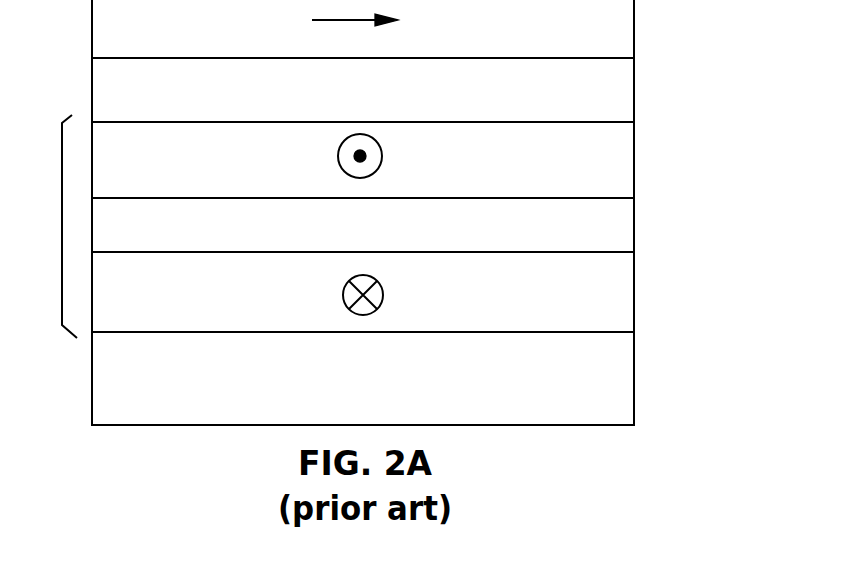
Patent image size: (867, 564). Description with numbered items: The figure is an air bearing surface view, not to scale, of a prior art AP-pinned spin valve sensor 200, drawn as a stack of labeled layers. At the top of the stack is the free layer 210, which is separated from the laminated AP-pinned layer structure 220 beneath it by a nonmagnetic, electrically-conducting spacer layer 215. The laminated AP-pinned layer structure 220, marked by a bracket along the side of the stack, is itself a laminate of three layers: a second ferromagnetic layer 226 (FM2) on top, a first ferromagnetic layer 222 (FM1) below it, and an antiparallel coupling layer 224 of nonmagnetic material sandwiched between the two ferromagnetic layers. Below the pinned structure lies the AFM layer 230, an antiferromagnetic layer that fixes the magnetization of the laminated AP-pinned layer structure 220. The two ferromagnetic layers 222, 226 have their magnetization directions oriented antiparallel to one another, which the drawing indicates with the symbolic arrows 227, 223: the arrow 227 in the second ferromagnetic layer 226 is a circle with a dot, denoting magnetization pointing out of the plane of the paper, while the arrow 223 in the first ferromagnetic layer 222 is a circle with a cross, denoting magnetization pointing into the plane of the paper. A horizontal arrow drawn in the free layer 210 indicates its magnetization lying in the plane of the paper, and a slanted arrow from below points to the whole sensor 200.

The AP-pinned SV sensor 200 is at (708, 460).
The free layer 210 is at (618, 35).
The spacer layer 215 is at (618, 98).
The laminated AP-pinned layer structure 220 is at (41, 226).
The first ferromagnetic layer 222 is at (615, 296).
The arrow 223 is at (384, 296).
The antiparallel coupling layer 224 is at (615, 233).
The second ferromagnetic layer 226 is at (617, 161).
The arrow 227 is at (382, 156).
The AFM layer 230 is at (615, 377).